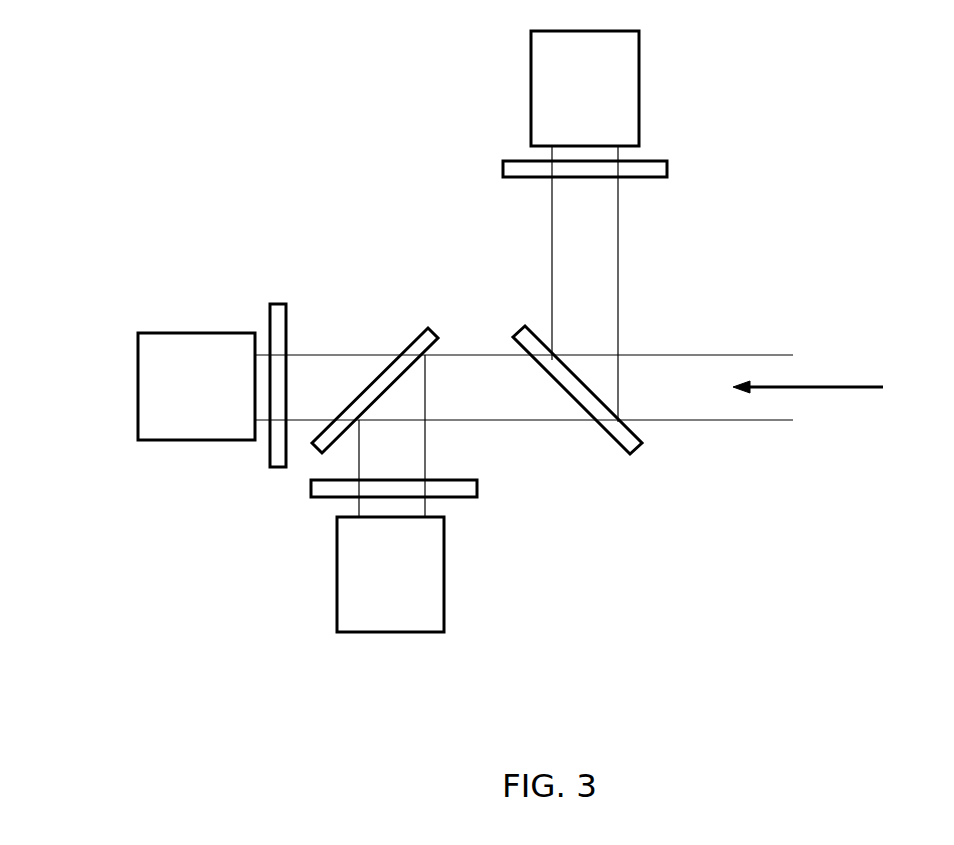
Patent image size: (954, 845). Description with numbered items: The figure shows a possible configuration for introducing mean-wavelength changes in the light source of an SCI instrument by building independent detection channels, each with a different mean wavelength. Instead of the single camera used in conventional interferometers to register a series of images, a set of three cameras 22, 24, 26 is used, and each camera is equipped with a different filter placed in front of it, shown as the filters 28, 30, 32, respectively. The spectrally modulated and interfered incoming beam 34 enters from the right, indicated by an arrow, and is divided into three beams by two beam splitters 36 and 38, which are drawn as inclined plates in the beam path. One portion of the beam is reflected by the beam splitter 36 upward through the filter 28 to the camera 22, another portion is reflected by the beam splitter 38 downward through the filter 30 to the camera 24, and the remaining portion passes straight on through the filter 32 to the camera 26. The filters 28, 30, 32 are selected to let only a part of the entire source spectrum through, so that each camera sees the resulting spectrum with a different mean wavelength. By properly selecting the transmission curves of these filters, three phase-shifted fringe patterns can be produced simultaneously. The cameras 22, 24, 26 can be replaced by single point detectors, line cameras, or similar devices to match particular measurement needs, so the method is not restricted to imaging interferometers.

The camera 22 is at (642, 83).
The camera 24 is at (446, 573).
The camera 26 is at (138, 428).
The filter 28 is at (670, 165).
The filter 30 is at (310, 493).
The filter 32 is at (287, 310).
The incoming beam 34 is at (858, 385).
The beam splitter 36 is at (640, 458).
The beam splitter 38 is at (430, 327).